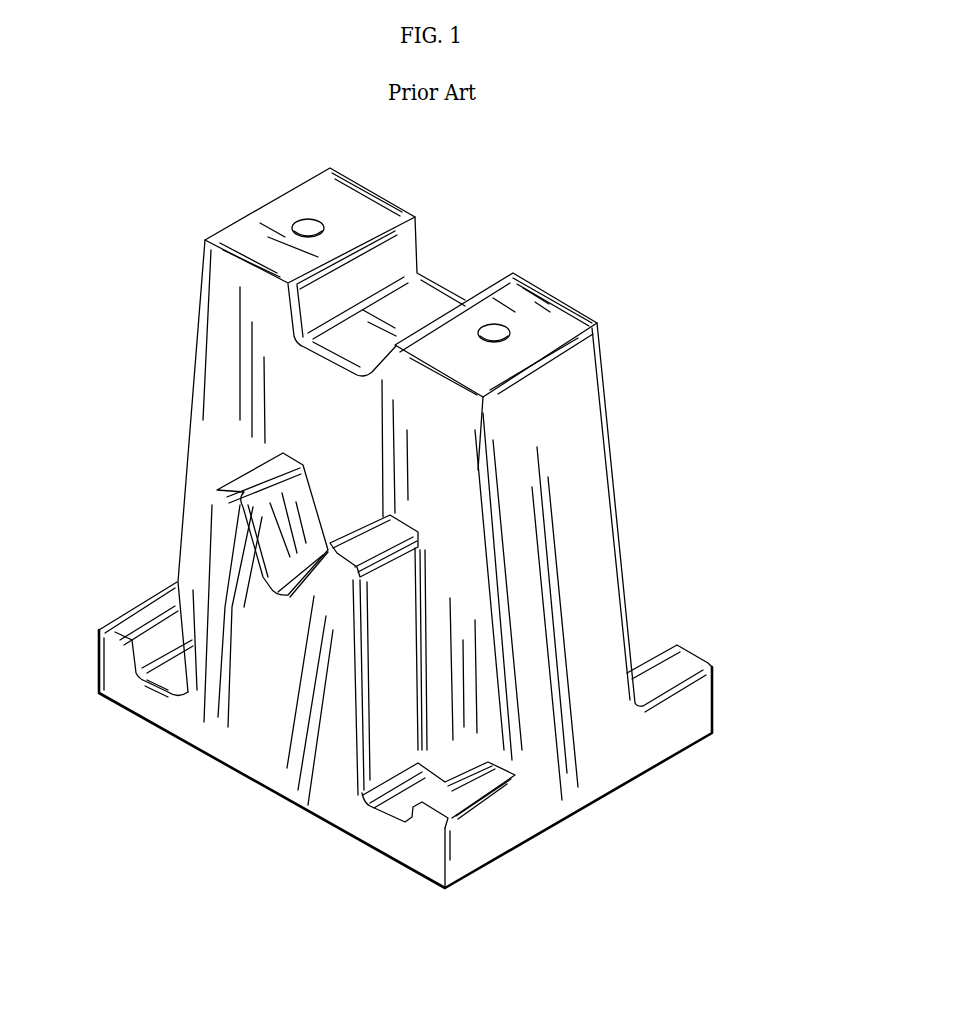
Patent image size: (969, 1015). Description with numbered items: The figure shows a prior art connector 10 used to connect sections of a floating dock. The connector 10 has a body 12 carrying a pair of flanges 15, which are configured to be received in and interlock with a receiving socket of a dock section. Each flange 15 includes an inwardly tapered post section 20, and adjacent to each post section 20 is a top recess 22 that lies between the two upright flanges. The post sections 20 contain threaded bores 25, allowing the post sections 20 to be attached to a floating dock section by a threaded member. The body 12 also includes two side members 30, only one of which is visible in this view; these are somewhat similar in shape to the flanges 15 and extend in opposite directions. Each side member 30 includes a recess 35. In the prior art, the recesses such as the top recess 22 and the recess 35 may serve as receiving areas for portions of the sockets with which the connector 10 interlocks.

The connector 10 is at (760, 268).
The body 12 is at (639, 433).
The flanges 15 is at (212, 402).
The post section 20 is at (248, 242).
The top recess 22 is at (452, 260).
The threaded bores 25 is at (312, 222).
The side members 30 is at (256, 735).
The recess 35 is at (279, 549).